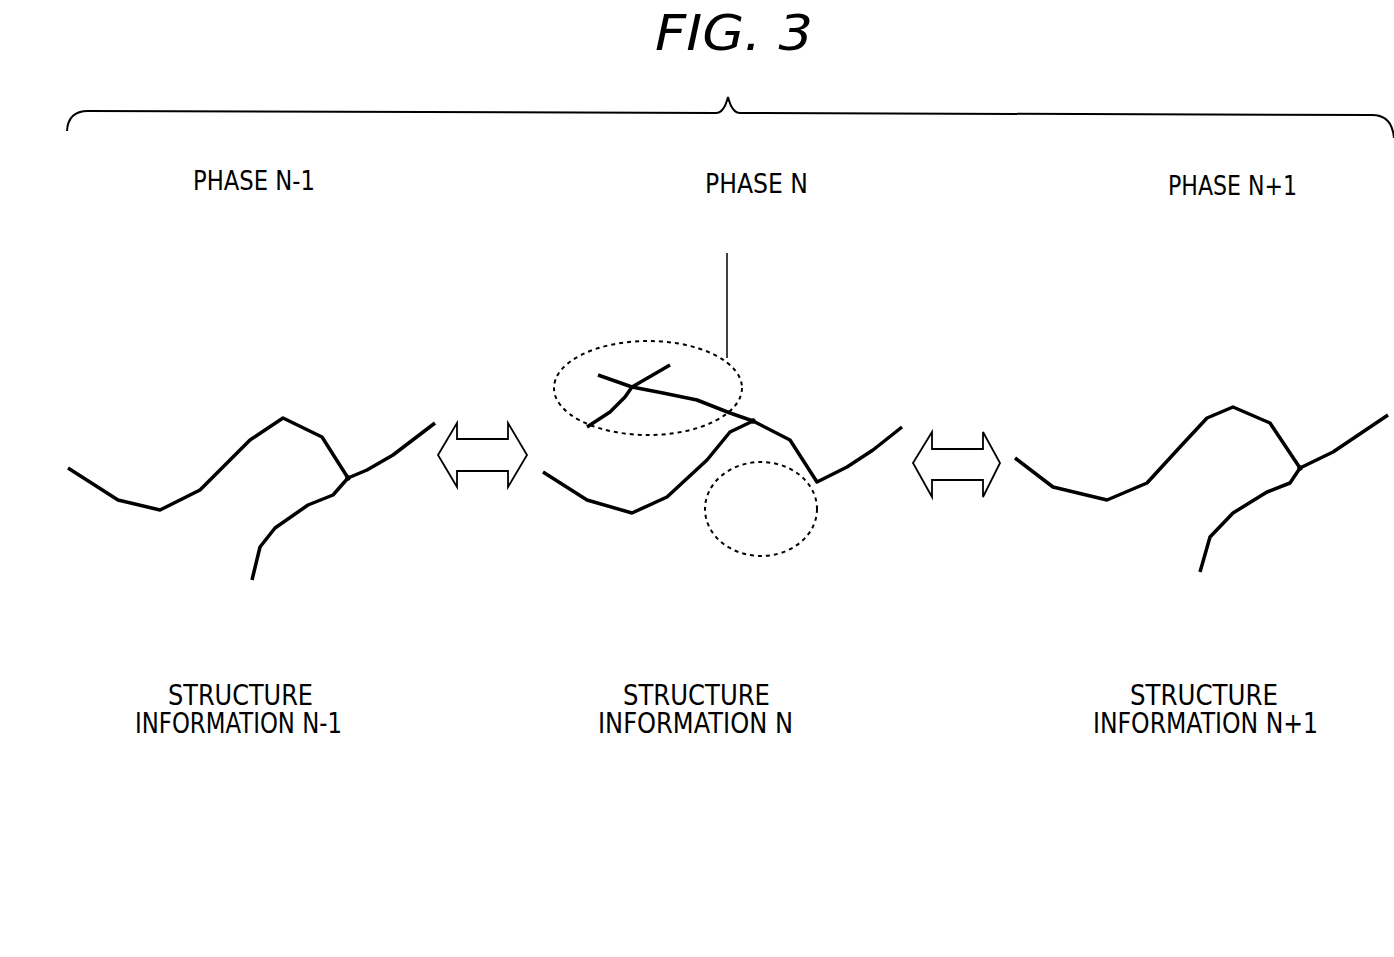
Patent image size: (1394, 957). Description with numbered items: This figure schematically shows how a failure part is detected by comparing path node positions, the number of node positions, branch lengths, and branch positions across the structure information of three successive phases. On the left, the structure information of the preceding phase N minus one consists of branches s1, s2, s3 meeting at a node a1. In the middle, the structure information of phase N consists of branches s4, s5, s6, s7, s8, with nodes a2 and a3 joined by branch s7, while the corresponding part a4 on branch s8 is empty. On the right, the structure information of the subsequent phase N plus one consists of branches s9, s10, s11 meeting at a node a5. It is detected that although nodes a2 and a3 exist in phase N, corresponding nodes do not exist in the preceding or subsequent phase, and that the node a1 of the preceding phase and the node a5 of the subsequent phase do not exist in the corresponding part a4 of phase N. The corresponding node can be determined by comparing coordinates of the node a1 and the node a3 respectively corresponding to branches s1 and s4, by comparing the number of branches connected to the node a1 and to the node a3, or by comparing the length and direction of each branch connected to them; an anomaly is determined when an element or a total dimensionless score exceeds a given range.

The branch s1 is at (208, 464).
The branch s2 is at (294, 529).
The branch s3 is at (391, 449).
The node a1 is at (348, 492).
The branch s4 is at (648, 477).
The branch s5 is at (609, 407).
The branch s6 is at (631, 361).
The branch s7 is at (675, 394).
The branch s8 is at (827, 450).
The node a2 is at (630, 366).
The node a3 is at (757, 395).
The corresponding part a4 is at (820, 505).
The branch s9 is at (1157, 453).
The branch s10 is at (1250, 519).
The branch s11 is at (1344, 438).
The node a5 is at (1302, 496).